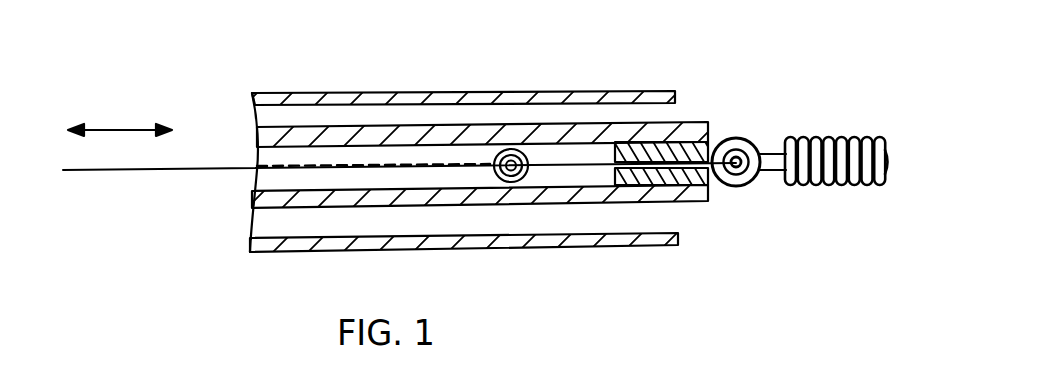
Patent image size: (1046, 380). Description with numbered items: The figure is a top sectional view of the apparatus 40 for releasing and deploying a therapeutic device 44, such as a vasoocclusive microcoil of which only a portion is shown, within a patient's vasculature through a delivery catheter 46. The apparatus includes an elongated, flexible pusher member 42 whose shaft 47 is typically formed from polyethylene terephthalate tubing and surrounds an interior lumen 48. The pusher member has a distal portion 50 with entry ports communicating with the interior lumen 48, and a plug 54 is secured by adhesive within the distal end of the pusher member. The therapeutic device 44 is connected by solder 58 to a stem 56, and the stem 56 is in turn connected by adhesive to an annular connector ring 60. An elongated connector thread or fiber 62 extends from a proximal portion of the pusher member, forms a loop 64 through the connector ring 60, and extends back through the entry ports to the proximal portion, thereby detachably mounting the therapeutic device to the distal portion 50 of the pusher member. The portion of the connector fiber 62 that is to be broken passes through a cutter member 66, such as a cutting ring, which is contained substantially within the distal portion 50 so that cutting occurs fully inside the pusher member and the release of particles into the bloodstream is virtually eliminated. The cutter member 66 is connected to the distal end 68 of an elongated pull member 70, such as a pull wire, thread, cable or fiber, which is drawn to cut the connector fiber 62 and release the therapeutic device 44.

The apparatus 40 is at (738, 95).
The pusher member 42 is at (630, 123).
The therapeutic device 44 is at (823, 210).
The delivery catheter 46 is at (513, 247).
The shaft 47 is at (268, 221).
The interior lumen 48 is at (595, 143).
The distal portion 50 is at (553, 205).
The plug 54 is at (683, 200).
The stem 56 is at (766, 175).
The solder 58 is at (800, 137).
The annular connector ring 60 is at (752, 137).
The connector thread or fiber 62 is at (350, 163).
The loop 64 is at (722, 175).
The cutter member 66 is at (498, 181).
The distal end 68 is at (481, 163).
The pull member 70 is at (228, 170).